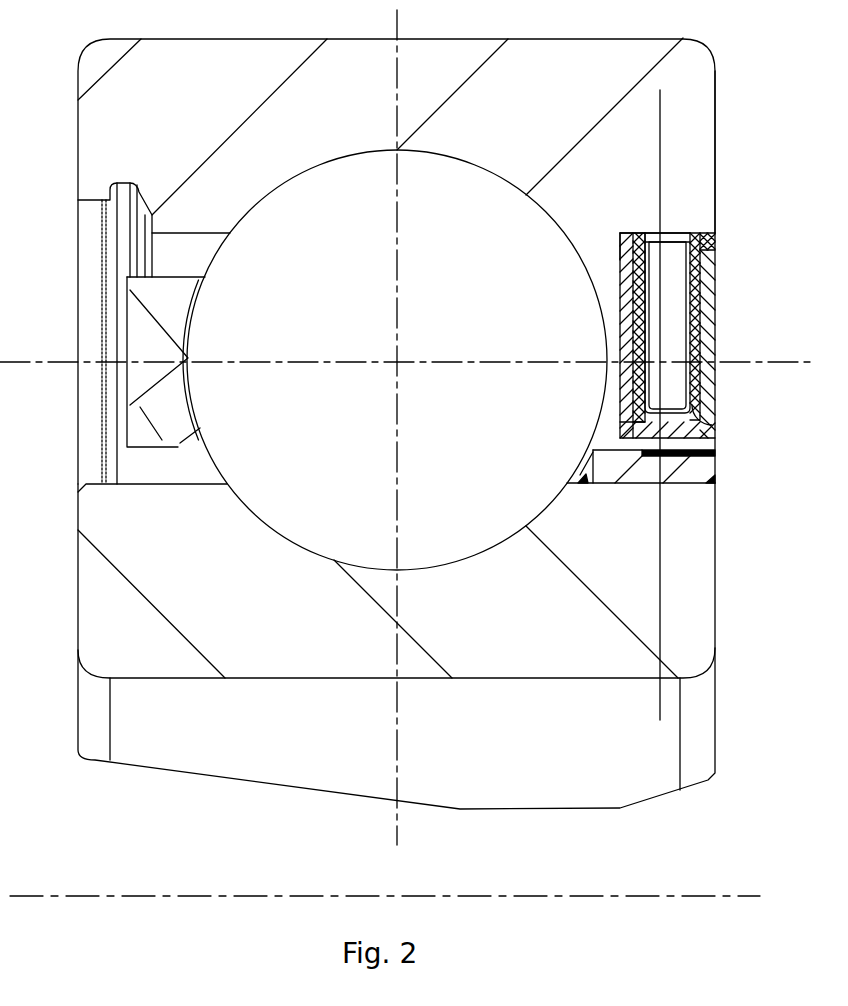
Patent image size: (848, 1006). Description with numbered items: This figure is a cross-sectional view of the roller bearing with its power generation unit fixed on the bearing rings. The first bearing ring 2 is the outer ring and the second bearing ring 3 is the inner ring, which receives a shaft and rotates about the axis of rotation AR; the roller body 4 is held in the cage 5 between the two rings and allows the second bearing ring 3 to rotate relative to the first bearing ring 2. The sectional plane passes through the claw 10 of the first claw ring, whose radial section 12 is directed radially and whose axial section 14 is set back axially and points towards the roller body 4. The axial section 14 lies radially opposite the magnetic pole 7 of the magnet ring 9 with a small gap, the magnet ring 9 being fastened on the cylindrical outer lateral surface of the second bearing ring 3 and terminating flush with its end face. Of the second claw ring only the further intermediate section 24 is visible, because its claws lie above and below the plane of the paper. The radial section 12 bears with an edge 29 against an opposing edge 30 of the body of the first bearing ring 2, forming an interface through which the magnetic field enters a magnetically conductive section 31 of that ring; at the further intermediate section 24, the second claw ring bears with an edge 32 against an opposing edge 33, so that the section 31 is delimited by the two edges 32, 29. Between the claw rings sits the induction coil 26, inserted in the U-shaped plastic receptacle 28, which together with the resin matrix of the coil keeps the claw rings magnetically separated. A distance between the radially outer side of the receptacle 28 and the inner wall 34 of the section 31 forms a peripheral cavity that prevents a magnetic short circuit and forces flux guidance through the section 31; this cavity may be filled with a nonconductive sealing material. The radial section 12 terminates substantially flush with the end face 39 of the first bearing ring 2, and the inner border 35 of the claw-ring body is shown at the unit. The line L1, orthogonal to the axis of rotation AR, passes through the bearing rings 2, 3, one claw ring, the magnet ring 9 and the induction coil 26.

The first bearing ring 2 is at (672, 98).
The second bearing ring 3 is at (670, 617).
The roller body 4 is at (327, 503).
The cage 5 is at (163, 290).
The magnetic pole 7 is at (650, 467).
The magnet ring 9 is at (722, 470).
The claw of first claw ring 10 is at (722, 402).
The radial section of claw 10 12 is at (715, 340).
The axial section of claw 10 14 is at (668, 435).
The further intermediate section 24 is at (630, 280).
The induction coil 26 is at (672, 317).
The receptacle 28 is at (633, 402).
The edge 29 is at (705, 246).
The opposing edge 30 is at (715, 218).
The section of body of first bearing ring 31 is at (662, 224).
The edge 32 is at (620, 246).
The opposing edge 33 is at (628, 233).
The inner wall of section 31 34 is at (650, 232).
The inner border of body 16 35 is at (677, 238).
The end face 39 is at (715, 95).
The line L1 is at (660, 125).
The axis of rotation AR is at (523, 896).